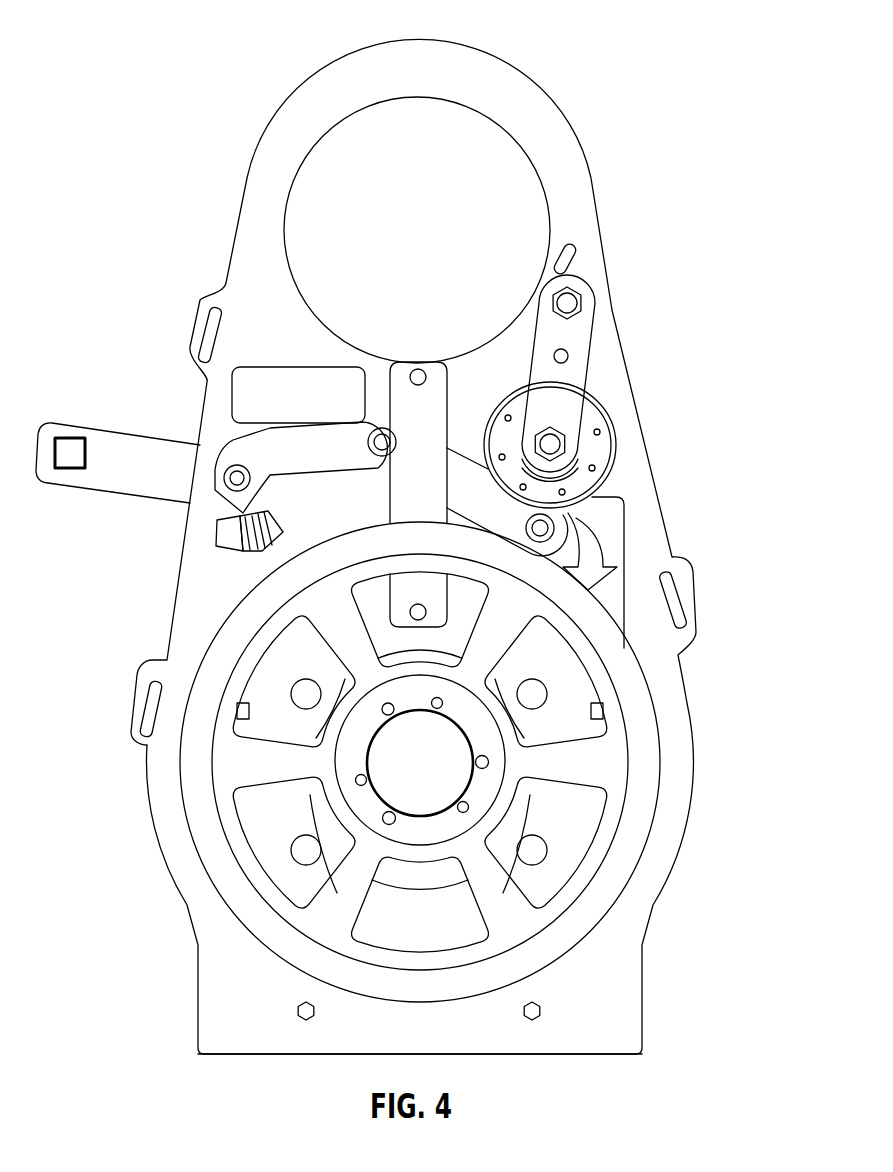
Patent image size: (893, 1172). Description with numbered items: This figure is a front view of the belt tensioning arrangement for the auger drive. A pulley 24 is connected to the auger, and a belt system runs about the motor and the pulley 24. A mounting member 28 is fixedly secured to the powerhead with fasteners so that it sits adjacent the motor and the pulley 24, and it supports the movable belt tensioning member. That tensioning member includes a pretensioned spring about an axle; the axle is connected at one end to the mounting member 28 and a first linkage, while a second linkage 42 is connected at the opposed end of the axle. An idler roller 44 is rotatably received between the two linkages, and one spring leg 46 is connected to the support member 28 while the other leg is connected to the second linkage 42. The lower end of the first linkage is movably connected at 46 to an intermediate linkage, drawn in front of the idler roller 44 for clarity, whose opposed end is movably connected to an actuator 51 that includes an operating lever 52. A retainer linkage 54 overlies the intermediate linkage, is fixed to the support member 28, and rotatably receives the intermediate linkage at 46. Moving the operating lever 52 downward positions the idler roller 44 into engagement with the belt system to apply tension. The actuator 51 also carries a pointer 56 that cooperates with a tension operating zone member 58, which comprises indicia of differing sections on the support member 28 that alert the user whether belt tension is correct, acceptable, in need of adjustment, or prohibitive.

The pulley 24 is at (651, 833).
The mounting member 28 is at (236, 1017).
The second linkage 42 is at (563, 387).
The idler roller 44 is at (540, 478).
The spring leg and pivot connection 46 is at (571, 247).
The actuator 51 is at (307, 445).
The operating lever 52 is at (72, 424).
The retainer linkage 54 is at (428, 395).
The pointer 56 is at (237, 518).
The tension operating zone member 58 is at (223, 548).